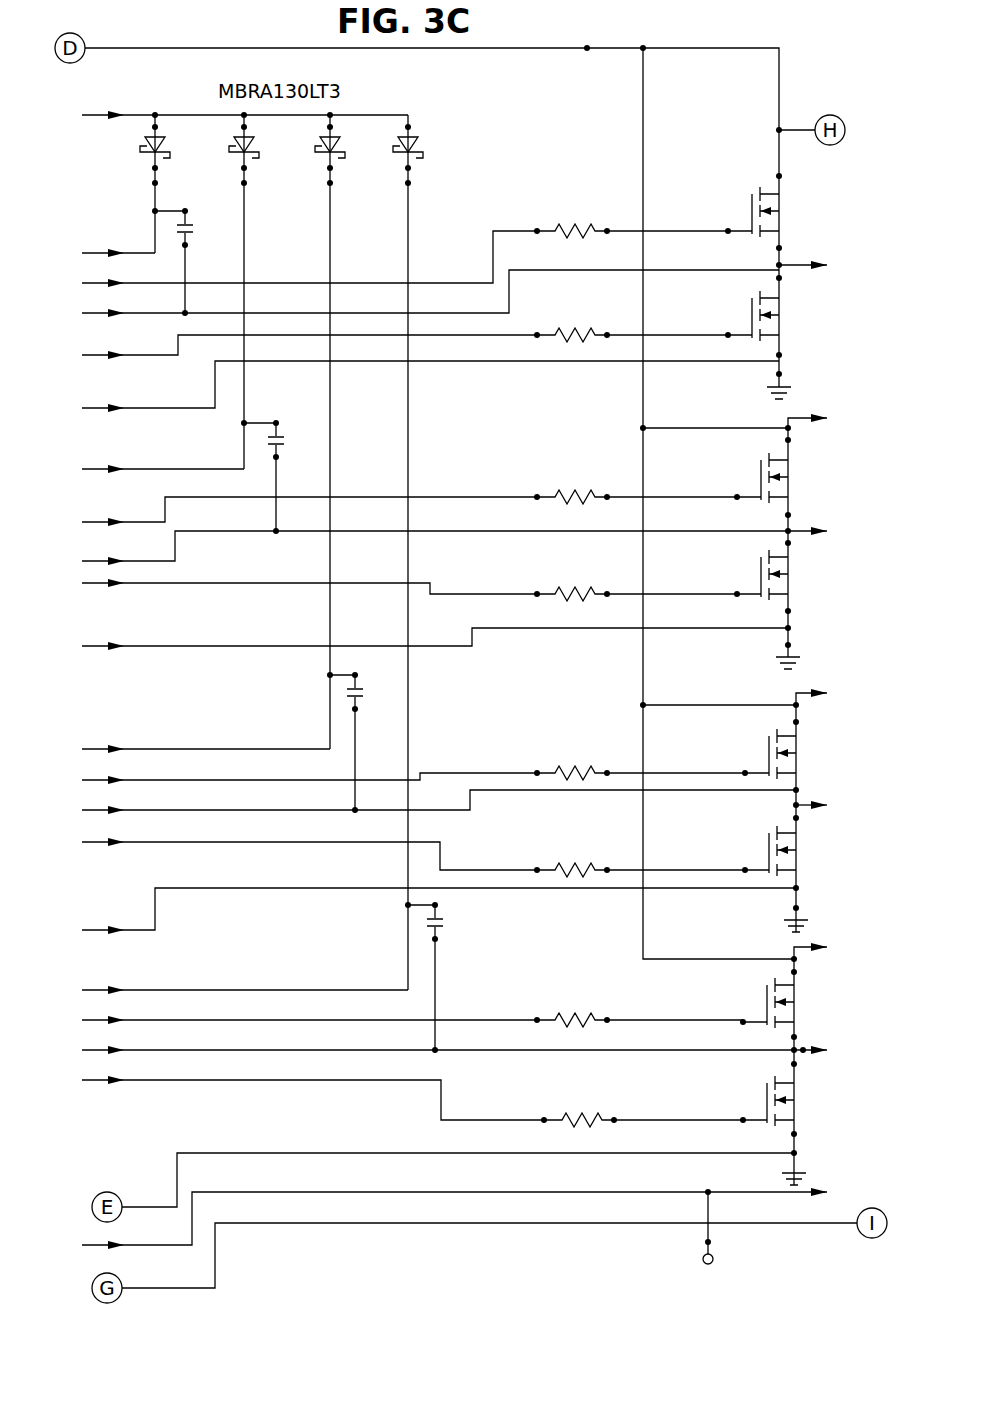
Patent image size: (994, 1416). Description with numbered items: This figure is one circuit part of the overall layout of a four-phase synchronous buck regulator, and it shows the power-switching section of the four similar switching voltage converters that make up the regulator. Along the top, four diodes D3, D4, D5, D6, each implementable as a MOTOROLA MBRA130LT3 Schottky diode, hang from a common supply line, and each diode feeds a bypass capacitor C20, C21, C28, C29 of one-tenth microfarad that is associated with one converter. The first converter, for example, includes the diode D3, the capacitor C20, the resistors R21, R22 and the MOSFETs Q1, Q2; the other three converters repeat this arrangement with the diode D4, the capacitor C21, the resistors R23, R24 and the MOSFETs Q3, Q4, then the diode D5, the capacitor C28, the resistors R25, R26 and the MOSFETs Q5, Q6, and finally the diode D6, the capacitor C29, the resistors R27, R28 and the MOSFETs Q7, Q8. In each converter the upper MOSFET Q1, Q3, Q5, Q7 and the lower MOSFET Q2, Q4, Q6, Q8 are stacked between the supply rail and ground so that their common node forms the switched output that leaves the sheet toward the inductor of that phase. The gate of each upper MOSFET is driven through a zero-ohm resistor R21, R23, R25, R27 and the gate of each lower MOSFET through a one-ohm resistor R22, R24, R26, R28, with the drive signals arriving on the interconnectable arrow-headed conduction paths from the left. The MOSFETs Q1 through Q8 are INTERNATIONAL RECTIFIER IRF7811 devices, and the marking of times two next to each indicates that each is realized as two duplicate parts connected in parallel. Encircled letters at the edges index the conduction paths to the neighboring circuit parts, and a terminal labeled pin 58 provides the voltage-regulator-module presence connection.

The diode D3 is at (169, 184).
The diode D4 is at (258, 292).
The diode D5 is at (344, 432).
The diode D6 is at (422, 552).
The capacitor C20 is at (195, 248).
The capacitor C21 is at (285, 464).
The capacitor C28 is at (367, 730).
The capacitor C29 is at (454, 973).
The resistor R21 is at (631, 207).
The resistor R22 is at (631, 312).
The resistor R23 is at (635, 473).
The resistor R24 is at (635, 570).
The resistor R25 is at (639, 748).
The resistor R26 is at (639, 846).
The resistor R27 is at (638, 996).
The resistor R28 is at (642, 1096).
The MOSFET Q1 is at (713, 199).
The MOSFET Q2 is at (713, 303).
The MOSFET Q3 is at (718, 465).
The MOSFET Q4 is at (718, 562).
The MOSFET Q5 is at (722, 741).
The MOSFET Q6 is at (722, 838).
The MOSFET Q7 is at (721, 990).
The MOSFET Q8 is at (721, 1088).
The VRM-pres pin 58 is at (707, 1257).